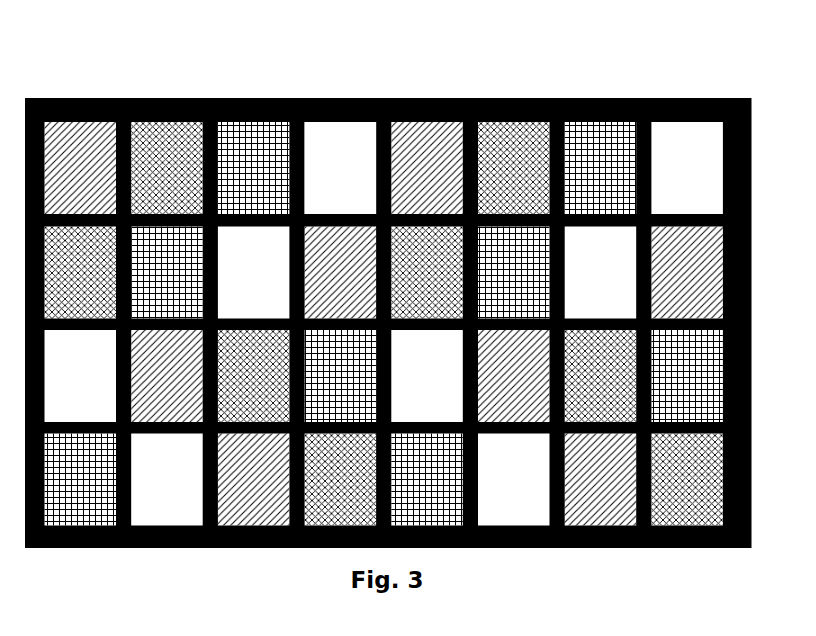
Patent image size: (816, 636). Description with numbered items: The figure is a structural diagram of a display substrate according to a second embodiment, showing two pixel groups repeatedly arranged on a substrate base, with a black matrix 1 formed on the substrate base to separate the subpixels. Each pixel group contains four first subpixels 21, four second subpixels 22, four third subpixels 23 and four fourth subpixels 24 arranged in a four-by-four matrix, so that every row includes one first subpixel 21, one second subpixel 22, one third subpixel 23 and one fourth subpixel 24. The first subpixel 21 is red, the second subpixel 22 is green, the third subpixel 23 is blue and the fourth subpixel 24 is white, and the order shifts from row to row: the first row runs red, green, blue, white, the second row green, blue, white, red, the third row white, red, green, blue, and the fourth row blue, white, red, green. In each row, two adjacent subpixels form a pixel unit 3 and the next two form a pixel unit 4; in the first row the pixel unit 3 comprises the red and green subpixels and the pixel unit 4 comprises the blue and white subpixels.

The black matrix 1 is at (481, 98).
The pixel unit 3 is at (124, 116).
The pixel unit 4 is at (297, 116).
The first subpixel 21 is at (79, 140).
The second subpixel 22 is at (167, 135).
The third subpixel 23 is at (246, 140).
The fourth subpixel 24 is at (341, 135).